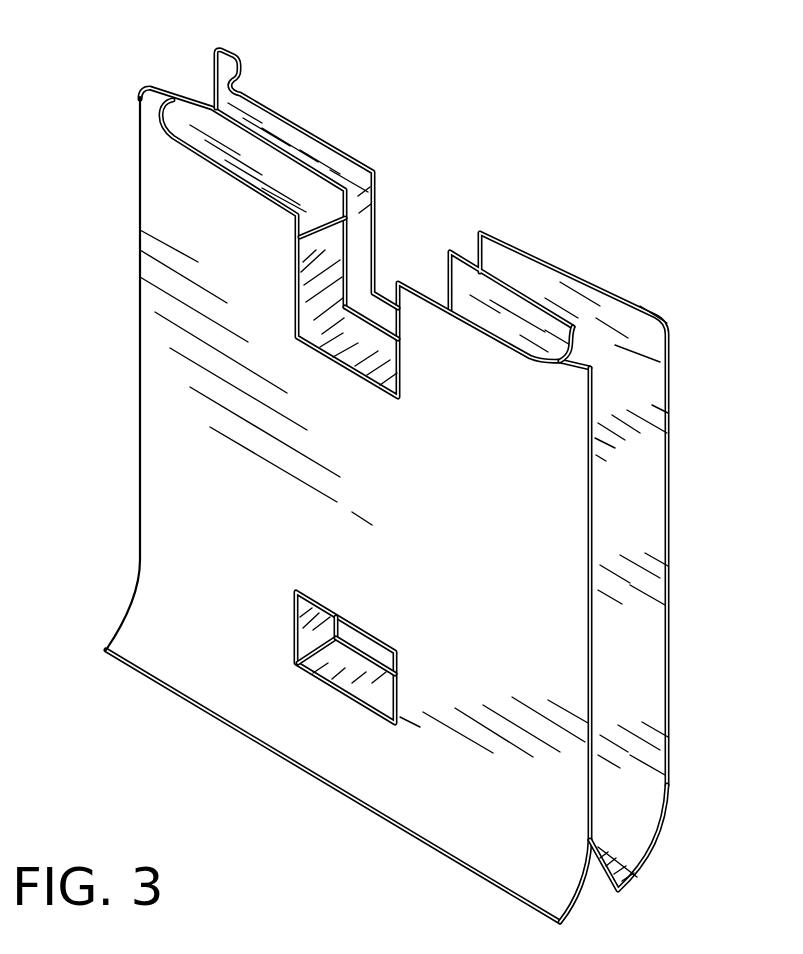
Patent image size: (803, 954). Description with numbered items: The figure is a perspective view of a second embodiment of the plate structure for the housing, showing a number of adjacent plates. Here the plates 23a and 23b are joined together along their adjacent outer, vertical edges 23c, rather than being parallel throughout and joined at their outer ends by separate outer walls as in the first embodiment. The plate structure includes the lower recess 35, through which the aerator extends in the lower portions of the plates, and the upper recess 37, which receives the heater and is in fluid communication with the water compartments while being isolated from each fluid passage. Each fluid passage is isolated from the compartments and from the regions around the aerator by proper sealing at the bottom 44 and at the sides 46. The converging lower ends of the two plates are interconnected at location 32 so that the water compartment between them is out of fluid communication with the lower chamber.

The plate 23a is at (163, 231).
The plate 23b is at (287, 173).
The outer vertical edges 23c is at (138, 136).
The recess 37 is at (394, 271).
The lower recess 35 is at (386, 652).
The bottom 44 is at (340, 666).
The sides 46 is at (303, 628).
The location 32 is at (630, 889).